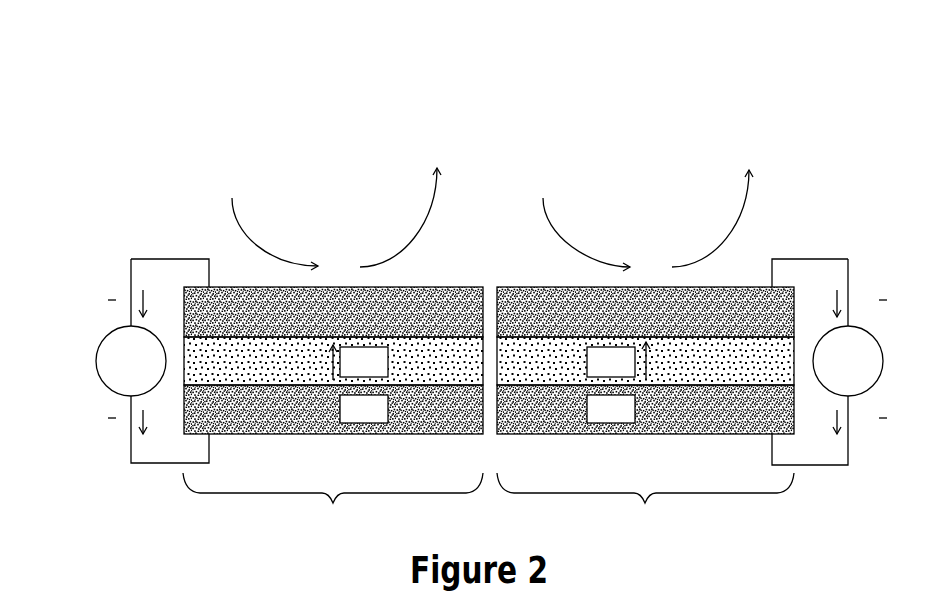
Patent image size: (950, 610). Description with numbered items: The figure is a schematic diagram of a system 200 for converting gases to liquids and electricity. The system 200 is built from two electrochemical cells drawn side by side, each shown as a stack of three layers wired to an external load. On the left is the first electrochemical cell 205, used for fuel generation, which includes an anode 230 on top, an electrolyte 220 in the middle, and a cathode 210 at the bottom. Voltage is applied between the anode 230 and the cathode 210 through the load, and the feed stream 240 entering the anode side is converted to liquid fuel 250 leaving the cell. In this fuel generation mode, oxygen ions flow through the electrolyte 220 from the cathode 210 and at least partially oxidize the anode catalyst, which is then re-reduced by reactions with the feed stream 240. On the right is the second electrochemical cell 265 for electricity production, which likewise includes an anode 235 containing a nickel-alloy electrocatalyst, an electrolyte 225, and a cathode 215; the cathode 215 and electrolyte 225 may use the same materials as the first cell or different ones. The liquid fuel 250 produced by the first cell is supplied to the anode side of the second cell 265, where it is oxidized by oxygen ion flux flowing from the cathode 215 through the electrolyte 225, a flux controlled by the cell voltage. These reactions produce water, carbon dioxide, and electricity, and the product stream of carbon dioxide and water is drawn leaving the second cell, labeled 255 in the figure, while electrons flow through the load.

The system 200 is at (489, 77).
The first electrochemical cell 205 is at (319, 371).
The second electrochemical cell 265 is at (660, 372).
The cathode 210 is at (333, 434).
The cathode 215 is at (645, 434).
The electrolyte 220 is at (333, 411).
The electrolyte 225 is at (645, 410).
The anode 230 is at (319, 272).
The anode 235 is at (660, 272).
The feed stream 240 is at (176, 219).
The liquid fuel 250 is at (468, 204).
The carbon dioxide and water product stream 255 is at (761, 202).